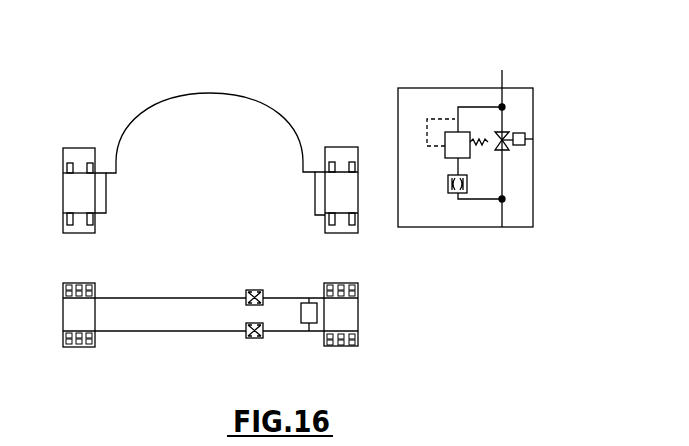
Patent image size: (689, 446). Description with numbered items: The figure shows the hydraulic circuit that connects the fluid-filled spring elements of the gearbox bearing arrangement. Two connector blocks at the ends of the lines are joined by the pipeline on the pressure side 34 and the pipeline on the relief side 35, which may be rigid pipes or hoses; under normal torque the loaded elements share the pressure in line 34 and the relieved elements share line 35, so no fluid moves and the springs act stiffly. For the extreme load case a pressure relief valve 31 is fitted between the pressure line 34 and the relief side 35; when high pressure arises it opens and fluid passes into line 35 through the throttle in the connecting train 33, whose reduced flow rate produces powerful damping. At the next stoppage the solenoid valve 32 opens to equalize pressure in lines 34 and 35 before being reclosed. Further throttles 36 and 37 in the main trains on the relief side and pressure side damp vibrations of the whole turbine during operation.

The pressure relief valve 31 is at (445, 158).
The solenoid valve 32 is at (533, 138).
The throttle in connecting train 33 is at (445, 192).
The pipeline on pressure side 34 is at (107, 213).
The pipeline on relief side 35 is at (128, 133).
The throttle in main train on relief side 36 is at (255, 290).
The throttle in main train on pressure side 37 is at (255, 338).